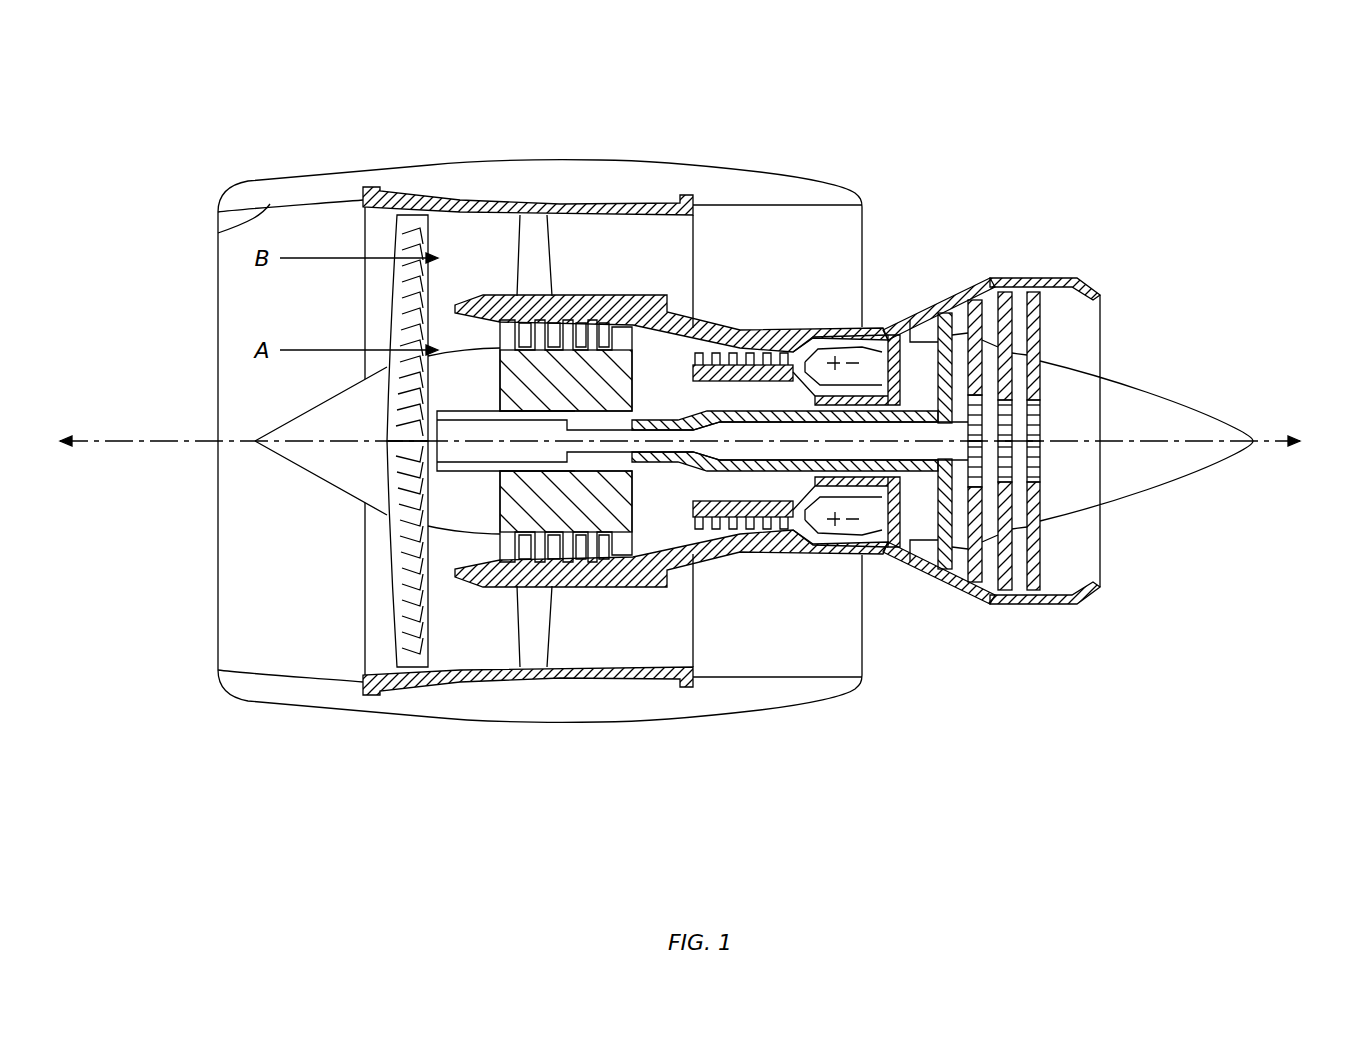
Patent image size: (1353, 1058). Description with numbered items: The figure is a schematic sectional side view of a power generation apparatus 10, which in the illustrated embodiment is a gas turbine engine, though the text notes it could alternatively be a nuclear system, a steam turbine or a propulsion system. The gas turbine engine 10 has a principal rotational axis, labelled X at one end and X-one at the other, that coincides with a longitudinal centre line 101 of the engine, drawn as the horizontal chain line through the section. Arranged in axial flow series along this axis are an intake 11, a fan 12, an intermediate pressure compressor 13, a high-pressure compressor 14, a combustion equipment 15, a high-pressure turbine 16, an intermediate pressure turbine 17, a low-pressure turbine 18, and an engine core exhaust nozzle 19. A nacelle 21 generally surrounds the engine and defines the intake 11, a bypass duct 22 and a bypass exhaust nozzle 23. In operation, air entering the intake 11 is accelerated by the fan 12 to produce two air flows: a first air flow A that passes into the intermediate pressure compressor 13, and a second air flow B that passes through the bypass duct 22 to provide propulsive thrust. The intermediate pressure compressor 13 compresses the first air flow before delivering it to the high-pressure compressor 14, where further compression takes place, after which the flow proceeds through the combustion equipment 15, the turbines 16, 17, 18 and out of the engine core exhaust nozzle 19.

The power generation apparatus 10 is at (196, 112).
The intake 11 is at (218, 233).
The fan 12 is at (391, 600).
The intermediate pressure compressor 13 is at (563, 572).
The high-pressure compressor 14 is at (743, 363).
The combustion equipment 15 is at (797, 546).
The high-pressure turbine 16 is at (892, 560).
The intermediate pressure turbine 17 is at (940, 316).
The low-pressure turbine 18 is at (968, 592).
The engine core exhaust nozzle 19 is at (1080, 285).
The nacelle 21 is at (528, 190).
The bypass duct 22 is at (835, 274).
The bypass exhaust nozzle 23 is at (858, 192).
The longitudinal centre line 101 is at (131, 433).